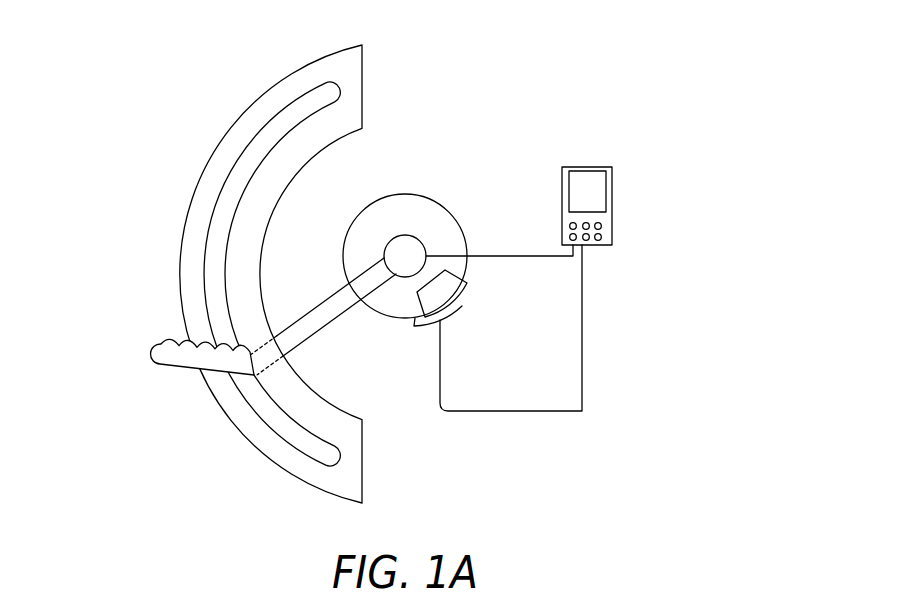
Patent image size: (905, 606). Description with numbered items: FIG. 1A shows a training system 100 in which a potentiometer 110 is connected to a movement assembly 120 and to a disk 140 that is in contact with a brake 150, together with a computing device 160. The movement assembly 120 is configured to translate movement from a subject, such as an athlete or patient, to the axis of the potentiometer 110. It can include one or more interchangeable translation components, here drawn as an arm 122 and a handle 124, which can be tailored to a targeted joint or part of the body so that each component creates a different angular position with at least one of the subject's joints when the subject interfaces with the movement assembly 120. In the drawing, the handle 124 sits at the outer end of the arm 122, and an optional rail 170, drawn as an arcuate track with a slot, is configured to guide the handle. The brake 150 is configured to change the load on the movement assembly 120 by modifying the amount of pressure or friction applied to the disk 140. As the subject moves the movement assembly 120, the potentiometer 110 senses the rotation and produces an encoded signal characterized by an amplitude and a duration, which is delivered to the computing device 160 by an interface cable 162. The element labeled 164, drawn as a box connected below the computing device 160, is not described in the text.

The training system 100 is at (146, 81).
The potentiometer 110 is at (410, 235).
The movement assembly 120 is at (238, 325).
The arm 122 is at (328, 315).
The handle 124 is at (167, 364).
The disk 140 is at (385, 228).
The brake 150 is at (467, 283).
The computing device 160 is at (562, 182).
The interface cable 162 is at (535, 255).
The control unit 164 is at (513, 412).
The rail 170 is at (233, 192).